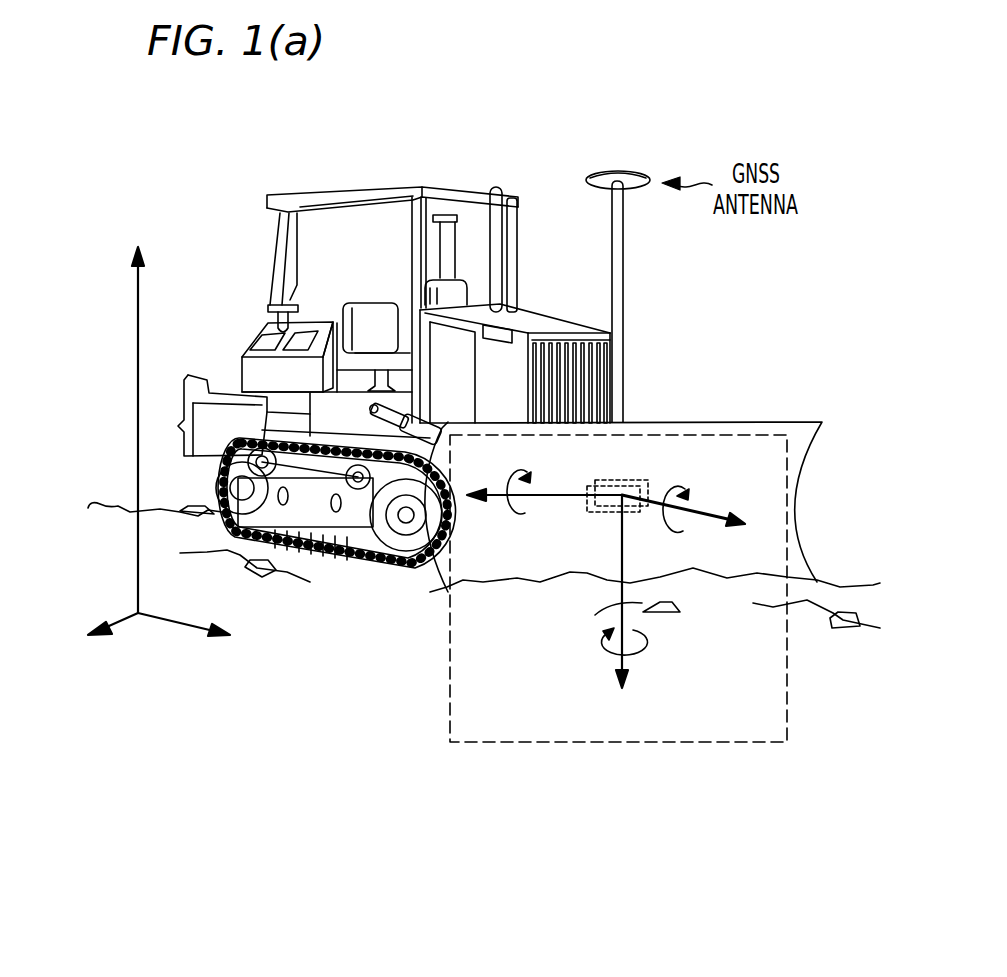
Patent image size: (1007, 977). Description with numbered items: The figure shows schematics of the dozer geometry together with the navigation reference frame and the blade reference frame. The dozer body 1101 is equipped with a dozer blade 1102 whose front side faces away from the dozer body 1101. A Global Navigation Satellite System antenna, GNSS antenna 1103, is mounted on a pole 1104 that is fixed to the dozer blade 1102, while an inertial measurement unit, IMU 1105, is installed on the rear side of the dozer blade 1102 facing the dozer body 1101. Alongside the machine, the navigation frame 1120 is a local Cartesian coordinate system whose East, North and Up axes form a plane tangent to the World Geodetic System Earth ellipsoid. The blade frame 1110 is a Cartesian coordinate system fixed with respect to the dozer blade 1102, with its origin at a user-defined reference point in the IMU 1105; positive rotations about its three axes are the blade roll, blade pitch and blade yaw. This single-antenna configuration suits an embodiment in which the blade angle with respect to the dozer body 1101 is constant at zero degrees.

The dozer body 1101 is at (308, 192).
The dozer blade 1102 is at (776, 422).
The GNSS antenna 1103 is at (624, 170).
The pole 1104 is at (629, 297).
The IMU 1105 is at (638, 483).
The blade frame 1110 is at (632, 752).
The navigation frame 1120 is at (162, 695).